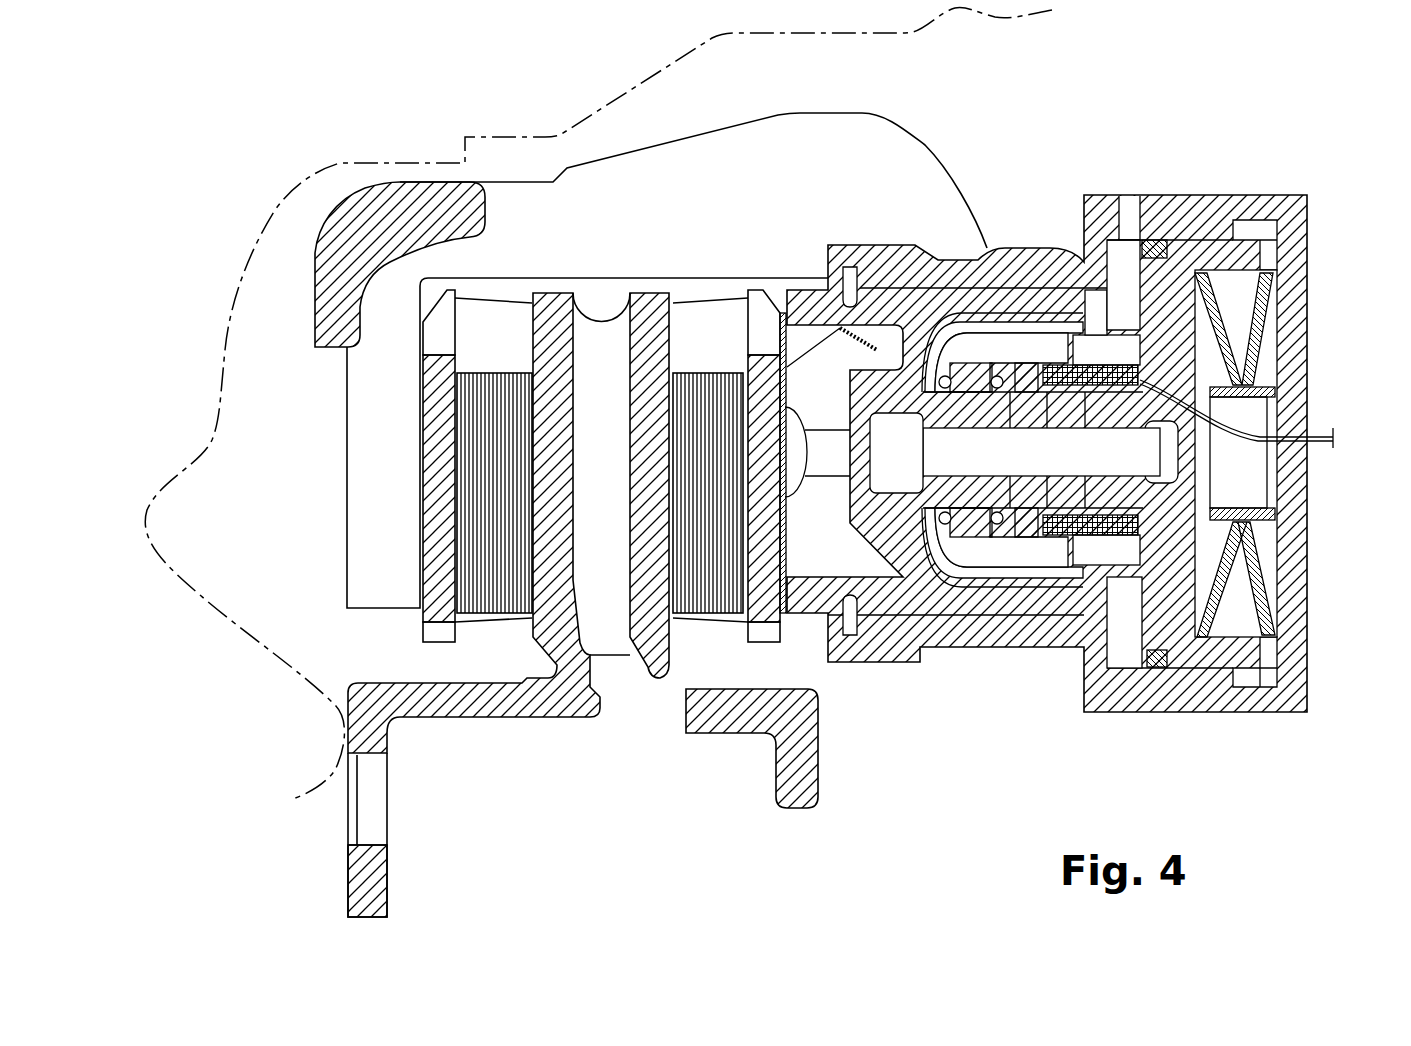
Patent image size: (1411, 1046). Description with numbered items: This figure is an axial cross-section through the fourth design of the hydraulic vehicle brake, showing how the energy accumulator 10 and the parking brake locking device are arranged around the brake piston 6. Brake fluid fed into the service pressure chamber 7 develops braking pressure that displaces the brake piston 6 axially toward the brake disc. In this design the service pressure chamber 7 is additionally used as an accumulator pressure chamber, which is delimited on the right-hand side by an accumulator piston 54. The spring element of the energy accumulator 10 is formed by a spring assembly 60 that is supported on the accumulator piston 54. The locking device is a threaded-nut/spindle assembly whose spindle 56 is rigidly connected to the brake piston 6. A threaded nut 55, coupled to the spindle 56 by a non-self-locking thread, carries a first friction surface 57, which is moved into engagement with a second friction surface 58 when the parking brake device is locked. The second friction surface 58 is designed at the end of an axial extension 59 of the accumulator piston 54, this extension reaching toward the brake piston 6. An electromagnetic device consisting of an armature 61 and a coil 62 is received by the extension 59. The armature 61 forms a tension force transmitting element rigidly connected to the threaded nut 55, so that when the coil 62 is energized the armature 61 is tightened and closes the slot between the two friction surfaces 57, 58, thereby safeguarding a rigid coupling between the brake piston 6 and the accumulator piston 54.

The brake piston 6 is at (938, 588).
The service pressure chamber 7 is at (1127, 652).
The energy accumulator 10 is at (1227, 595).
The accumulator piston 54 is at (1180, 625).
The threaded nut 55 is at (973, 537).
The spindle 56 is at (898, 478).
The first friction surface 57 is at (978, 348).
The second friction surface 58 is at (1000, 567).
The axial extension 59 is at (1032, 352).
The spring assembly 60 is at (1257, 350).
The armature 61 is at (1055, 497).
The coil 62 is at (1066, 372).